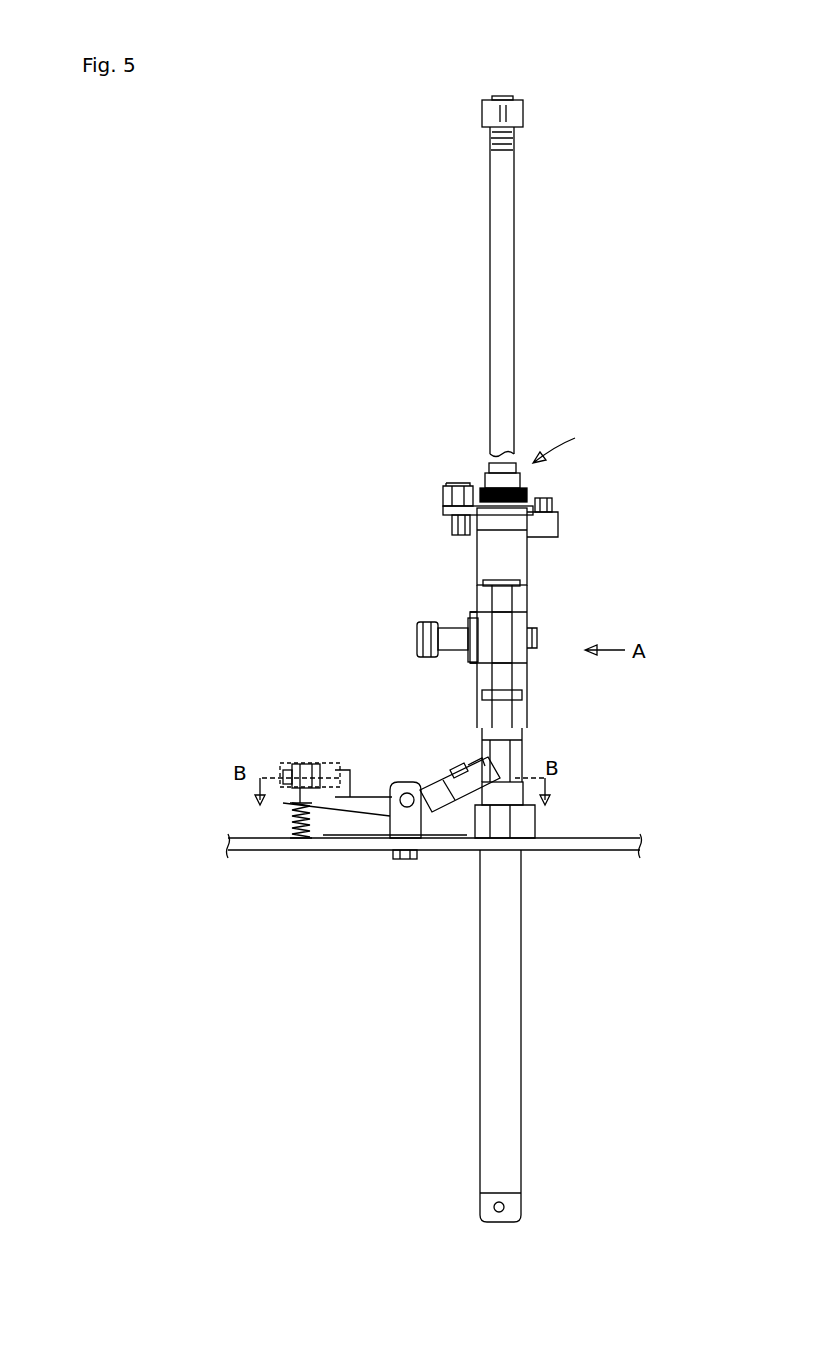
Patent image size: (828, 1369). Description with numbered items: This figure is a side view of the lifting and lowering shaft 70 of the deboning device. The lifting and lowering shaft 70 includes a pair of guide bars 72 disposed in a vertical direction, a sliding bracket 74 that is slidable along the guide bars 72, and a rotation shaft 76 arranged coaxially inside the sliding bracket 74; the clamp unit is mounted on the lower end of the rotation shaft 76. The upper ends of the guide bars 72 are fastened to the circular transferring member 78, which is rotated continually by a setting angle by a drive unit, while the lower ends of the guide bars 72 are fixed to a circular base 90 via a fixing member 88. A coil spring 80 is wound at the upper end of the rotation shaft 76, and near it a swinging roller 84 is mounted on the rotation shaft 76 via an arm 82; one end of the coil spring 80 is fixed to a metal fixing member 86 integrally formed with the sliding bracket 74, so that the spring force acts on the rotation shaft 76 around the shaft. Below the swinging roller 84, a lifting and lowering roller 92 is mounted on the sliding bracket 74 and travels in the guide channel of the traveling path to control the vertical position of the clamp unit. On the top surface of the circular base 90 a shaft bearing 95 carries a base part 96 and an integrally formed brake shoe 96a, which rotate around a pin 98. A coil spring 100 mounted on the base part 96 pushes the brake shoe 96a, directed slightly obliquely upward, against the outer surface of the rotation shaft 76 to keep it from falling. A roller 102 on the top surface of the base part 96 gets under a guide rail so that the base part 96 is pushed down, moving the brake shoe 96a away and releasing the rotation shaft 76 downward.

The lifting and lowering shaft 70 is at (560, 444).
The guide bars 72 is at (515, 314).
The sliding bracket 74 is at (477, 565).
The rotation shaft 76 is at (522, 748).
The circular transferring member 78 is at (524, 109).
The coil spring 80 is at (527, 493).
The arm 82 is at (451, 521).
The swinging roller 84 is at (440, 493).
The metal fixing member 86 is at (556, 514).
The fixing member 88 is at (540, 812).
The circular base 90 is at (570, 852).
The lifting and lowering roller 92 is at (427, 633).
The shaft bearing 95 is at (392, 850).
The base part 96 is at (344, 794).
The brake shoe 96a is at (475, 771).
The pin 98 is at (405, 790).
The coil spring 100 is at (290, 838).
The roller 102 is at (298, 763).